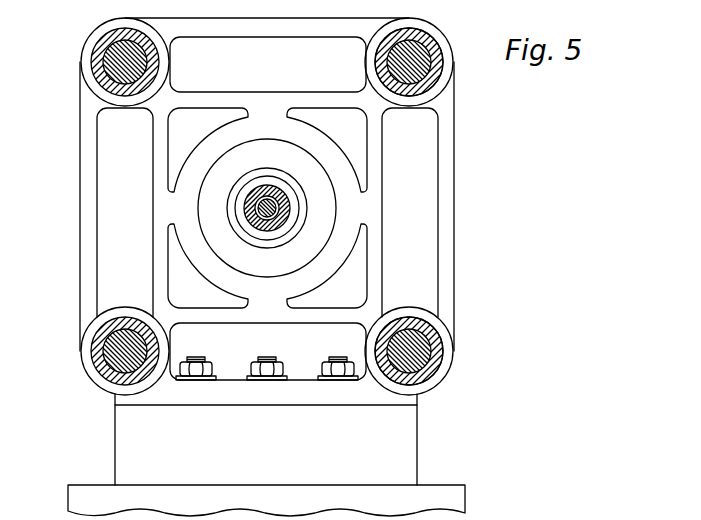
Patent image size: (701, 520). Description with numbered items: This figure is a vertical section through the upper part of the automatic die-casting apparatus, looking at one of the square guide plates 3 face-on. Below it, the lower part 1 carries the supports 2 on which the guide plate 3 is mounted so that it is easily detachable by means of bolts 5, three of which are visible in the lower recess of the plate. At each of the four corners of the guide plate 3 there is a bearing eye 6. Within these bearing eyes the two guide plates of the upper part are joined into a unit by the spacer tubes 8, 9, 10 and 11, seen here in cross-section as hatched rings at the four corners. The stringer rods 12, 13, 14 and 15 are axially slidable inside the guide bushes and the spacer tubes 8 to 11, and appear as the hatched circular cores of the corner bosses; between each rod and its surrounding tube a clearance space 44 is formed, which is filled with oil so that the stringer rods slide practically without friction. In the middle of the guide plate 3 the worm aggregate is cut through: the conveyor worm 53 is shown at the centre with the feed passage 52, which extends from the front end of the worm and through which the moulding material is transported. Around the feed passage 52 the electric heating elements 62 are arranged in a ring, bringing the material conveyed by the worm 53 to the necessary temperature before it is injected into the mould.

The lower part 1 is at (456, 492).
The supports 2 is at (410, 451).
The square guide plate 3 is at (80, 242).
The bolts 5 is at (252, 366).
The bearing eyes 6 is at (83, 44).
The spacer tube 8 is at (100, 63).
The spacer tube 9 is at (437, 82).
The spacer tube 10 is at (100, 333).
The spacer tube 11 is at (435, 340).
The stringer rod 12 is at (103, 77).
The stringer rod 13 is at (413, 77).
The stringer rod 14 is at (103, 353).
The stringer rod 15 is at (420, 360).
The clearance space 44 is at (433, 59).
The feed passage 52 is at (292, 203).
The conveyor worm 53 is at (290, 203).
The electric heating elements 62 is at (292, 222).